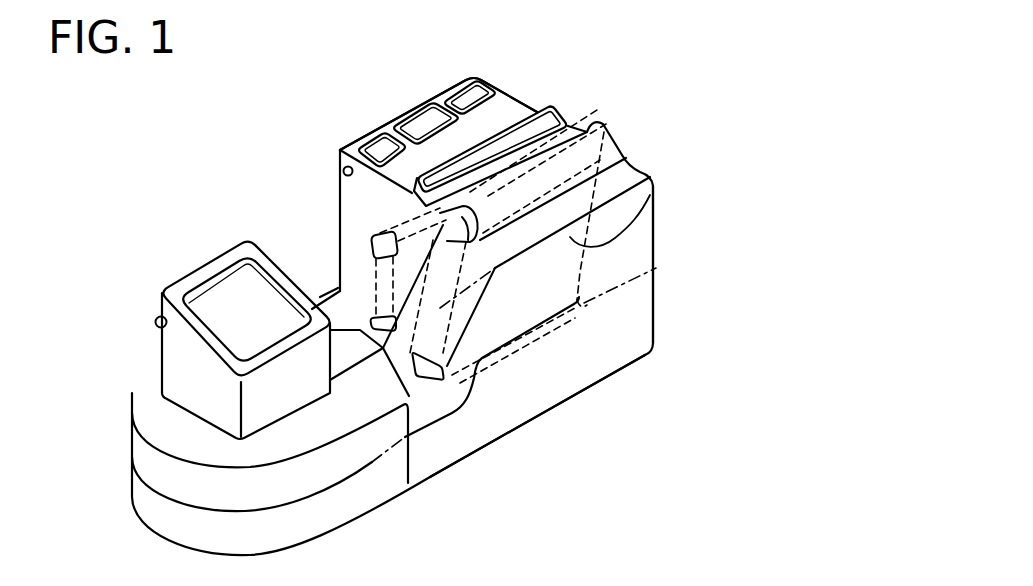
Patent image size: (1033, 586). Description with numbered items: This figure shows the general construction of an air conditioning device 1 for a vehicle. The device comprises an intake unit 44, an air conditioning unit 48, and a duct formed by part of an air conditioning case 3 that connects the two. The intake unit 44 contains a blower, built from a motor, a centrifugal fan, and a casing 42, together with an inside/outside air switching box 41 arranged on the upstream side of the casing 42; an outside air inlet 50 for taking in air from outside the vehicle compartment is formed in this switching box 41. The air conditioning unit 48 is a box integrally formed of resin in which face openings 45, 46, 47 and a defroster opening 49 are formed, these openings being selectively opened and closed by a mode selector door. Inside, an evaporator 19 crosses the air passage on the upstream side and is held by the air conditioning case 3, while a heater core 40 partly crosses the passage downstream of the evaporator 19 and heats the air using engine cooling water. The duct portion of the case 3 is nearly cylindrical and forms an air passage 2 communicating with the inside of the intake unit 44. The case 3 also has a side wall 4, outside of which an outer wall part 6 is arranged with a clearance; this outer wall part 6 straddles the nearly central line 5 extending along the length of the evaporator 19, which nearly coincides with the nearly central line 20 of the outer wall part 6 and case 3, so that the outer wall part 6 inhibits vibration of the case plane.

The air conditioning device 1 is at (600, 101).
The air passage 2 is at (440, 447).
The air conditioning case 3 is at (515, 428).
The side wall 4 is at (557, 377).
The nearly central line 5 is at (612, 240).
The outer wall part 6 is at (588, 332).
The evaporator 19 is at (610, 166).
The nearly central line 20 is at (657, 286).
The heater core 40 is at (370, 243).
The inside/outside air switching box 41 is at (178, 363).
The casing 42 is at (163, 530).
The intake unit 44 is at (147, 331).
The face opening 45 is at (467, 97).
The face opening 46 is at (423, 120).
The face opening 47 is at (375, 147).
The air conditioning unit 48 is at (487, 70).
The defroster opening 49 is at (522, 132).
The outside air inlet 50 is at (212, 292).